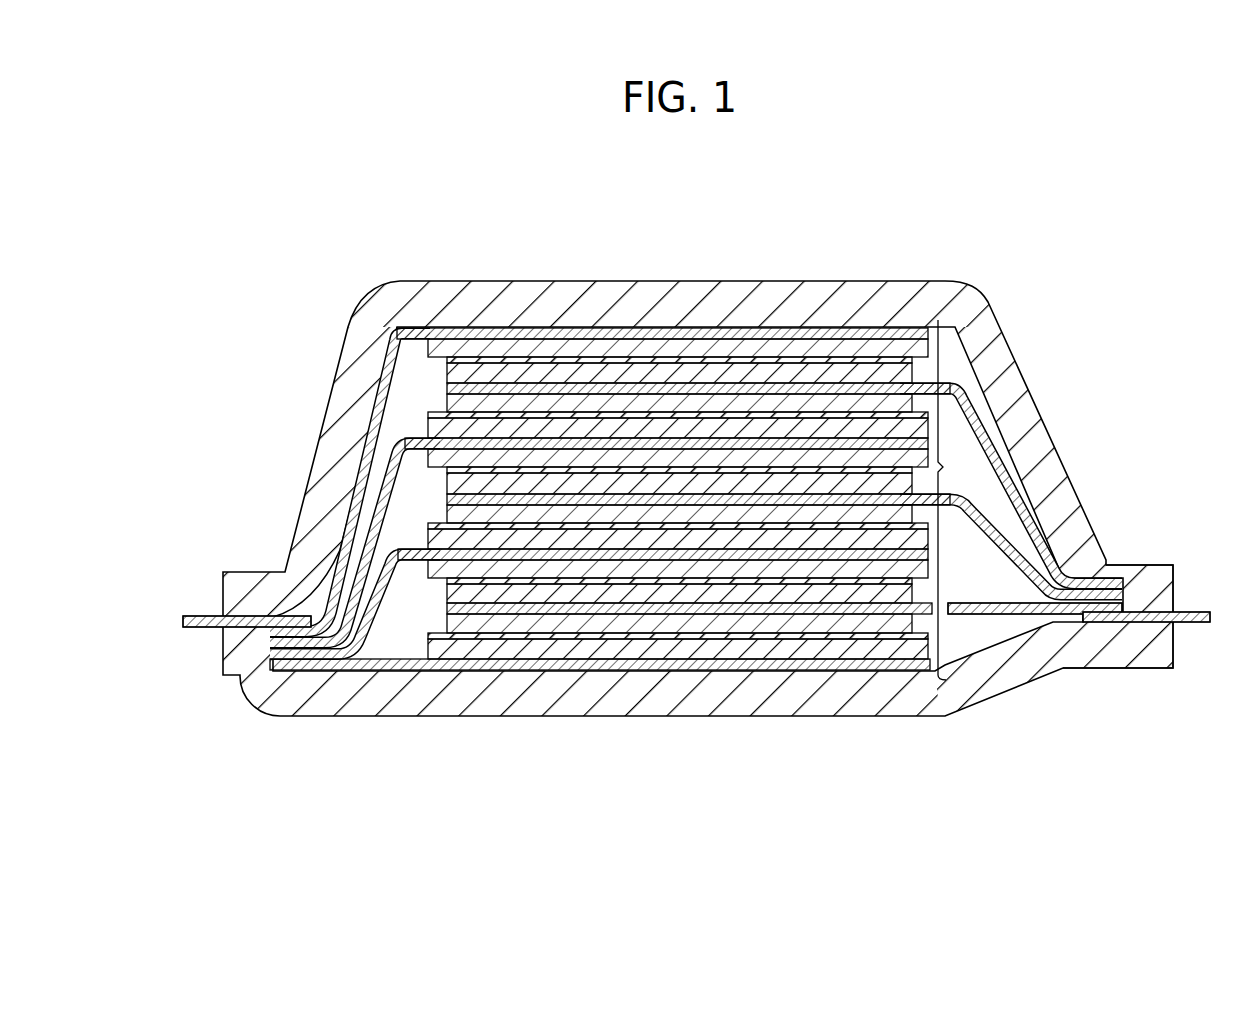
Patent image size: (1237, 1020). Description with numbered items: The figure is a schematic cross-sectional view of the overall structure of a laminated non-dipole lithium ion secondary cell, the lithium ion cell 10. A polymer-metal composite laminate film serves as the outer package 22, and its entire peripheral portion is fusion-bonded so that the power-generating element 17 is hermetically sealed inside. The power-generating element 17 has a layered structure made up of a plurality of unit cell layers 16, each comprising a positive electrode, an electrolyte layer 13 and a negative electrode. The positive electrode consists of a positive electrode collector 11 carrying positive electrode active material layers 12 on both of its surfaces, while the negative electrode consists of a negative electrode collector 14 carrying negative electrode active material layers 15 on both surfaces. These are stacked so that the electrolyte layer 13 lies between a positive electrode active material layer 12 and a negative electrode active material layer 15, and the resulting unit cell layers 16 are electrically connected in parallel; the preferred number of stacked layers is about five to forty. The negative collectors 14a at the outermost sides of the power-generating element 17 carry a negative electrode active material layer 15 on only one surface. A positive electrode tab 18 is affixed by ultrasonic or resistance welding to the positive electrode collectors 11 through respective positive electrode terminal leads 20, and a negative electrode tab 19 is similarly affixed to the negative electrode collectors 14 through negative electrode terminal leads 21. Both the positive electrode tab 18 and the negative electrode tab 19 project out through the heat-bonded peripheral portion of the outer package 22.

The lithium ion cell 10 is at (821, 155).
The positive electrode collector 11 is at (795, 386).
The positive electrode active material layer 12 is at (620, 376).
The electrolyte layer 13 is at (575, 360).
The negative electrode collector 14 is at (750, 440).
The negative collector 14a is at (846, 330).
The negative electrode active material layer 15 is at (525, 347).
The unit cell layer 16 is at (814, 237).
The power-generating element 17 is at (956, 500).
The positive electrode tab 18 is at (1192, 611).
The negative electrode tab 19 is at (203, 615).
The positive electrode terminal lead 20 is at (1033, 615).
The negative electrode terminal lead 21 is at (395, 462).
The outer package 22 is at (1152, 575).